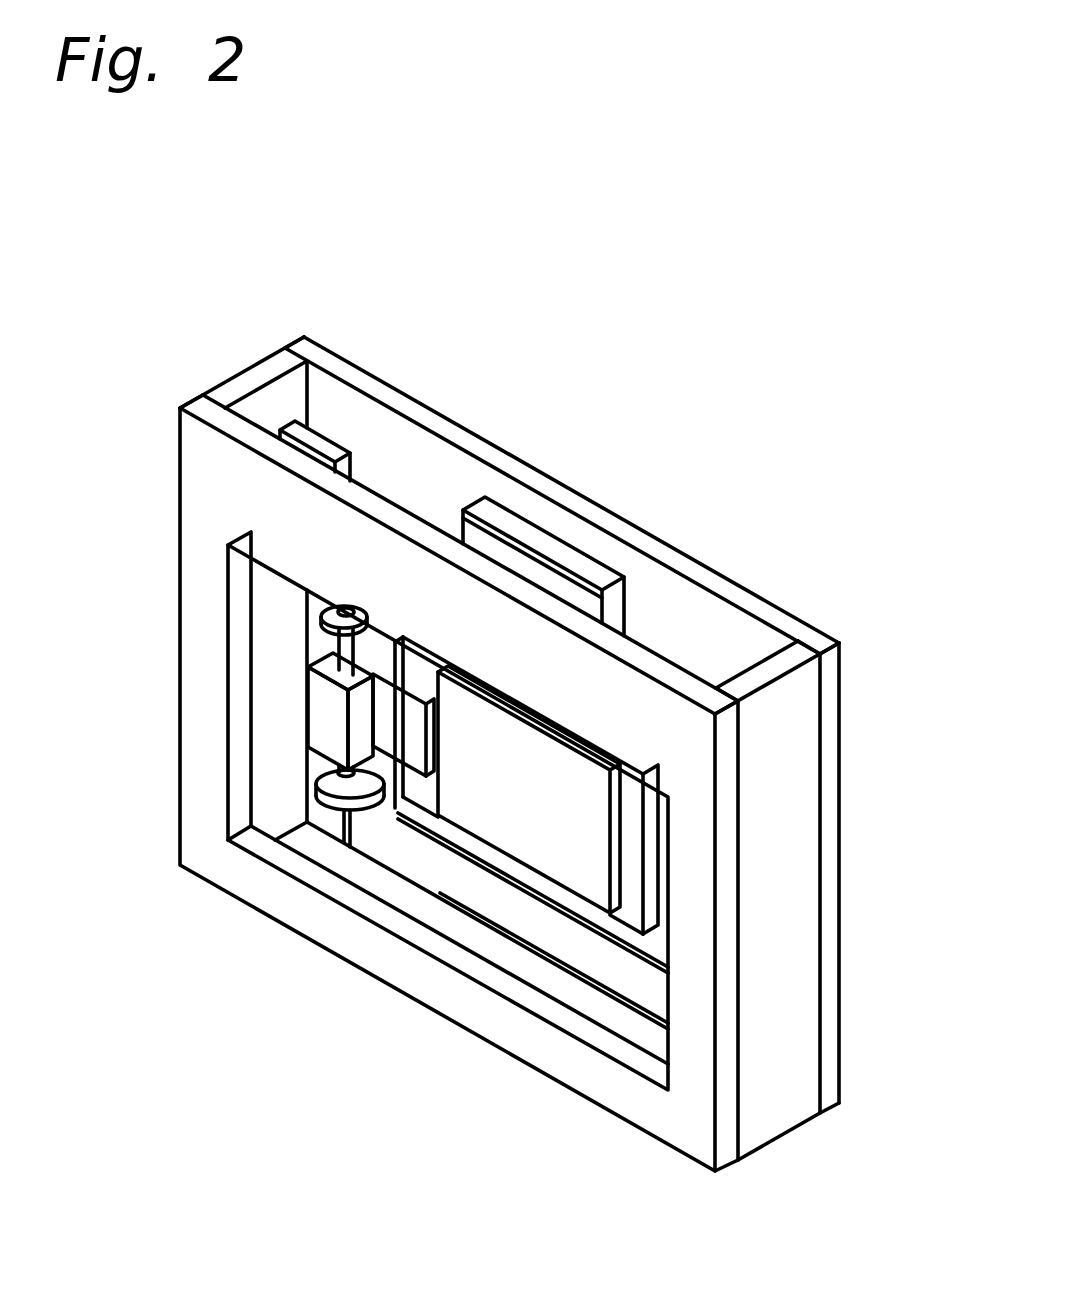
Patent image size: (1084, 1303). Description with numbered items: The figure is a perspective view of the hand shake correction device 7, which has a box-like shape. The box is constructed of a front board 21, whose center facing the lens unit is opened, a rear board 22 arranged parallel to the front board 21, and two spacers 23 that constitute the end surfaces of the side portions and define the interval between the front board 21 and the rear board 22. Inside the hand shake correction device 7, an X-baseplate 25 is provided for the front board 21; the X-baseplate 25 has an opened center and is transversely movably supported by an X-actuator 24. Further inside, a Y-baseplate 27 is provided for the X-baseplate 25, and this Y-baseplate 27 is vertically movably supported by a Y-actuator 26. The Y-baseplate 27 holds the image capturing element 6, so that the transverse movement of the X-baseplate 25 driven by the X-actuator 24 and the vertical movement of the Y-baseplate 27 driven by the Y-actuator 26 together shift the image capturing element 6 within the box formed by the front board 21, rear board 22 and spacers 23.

The hand shake correction device 7 is at (401, 675).
The front board 21 is at (248, 887).
The rear board 22 is at (448, 427).
The spacers 23 is at (247, 382).
The X-actuator 24 is at (527, 570).
The X-baseplate 25 is at (410, 853).
The Y-actuator 26 is at (322, 722).
The Y-baseplate 27 is at (627, 873).
The image capturing element 6 is at (527, 825).